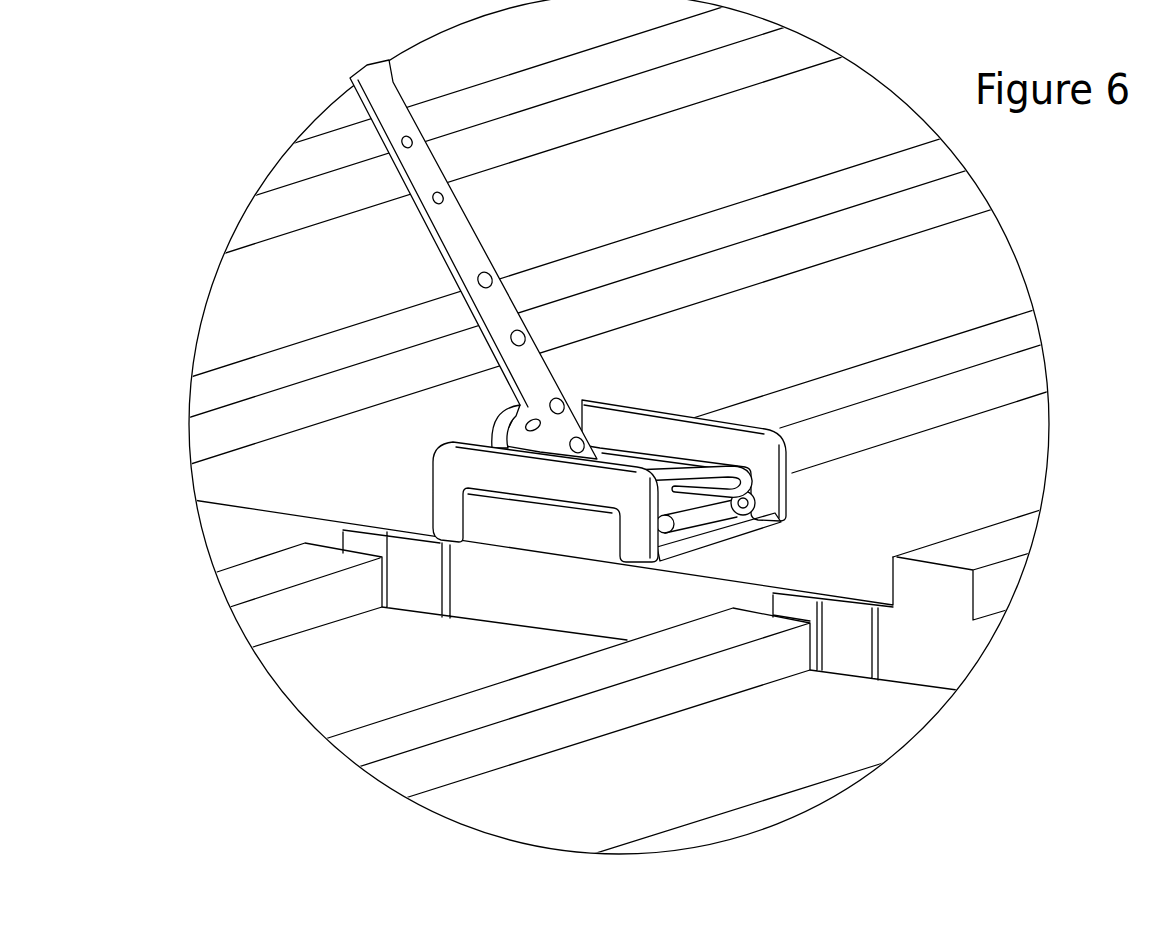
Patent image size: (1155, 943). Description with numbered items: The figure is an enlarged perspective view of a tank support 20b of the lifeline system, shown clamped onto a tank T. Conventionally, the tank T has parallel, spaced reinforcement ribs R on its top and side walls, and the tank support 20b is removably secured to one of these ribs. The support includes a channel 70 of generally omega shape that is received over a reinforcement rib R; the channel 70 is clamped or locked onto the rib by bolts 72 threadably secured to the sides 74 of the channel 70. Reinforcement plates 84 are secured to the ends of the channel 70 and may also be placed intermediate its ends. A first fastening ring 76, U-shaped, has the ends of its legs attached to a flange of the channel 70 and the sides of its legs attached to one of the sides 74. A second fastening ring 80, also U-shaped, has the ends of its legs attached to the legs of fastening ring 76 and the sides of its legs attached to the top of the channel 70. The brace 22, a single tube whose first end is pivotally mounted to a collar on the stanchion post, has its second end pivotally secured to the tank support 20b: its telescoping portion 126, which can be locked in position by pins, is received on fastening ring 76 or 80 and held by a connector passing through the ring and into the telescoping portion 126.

The brace 22 is at (513, 259).
The telescoping portion 126 is at (543, 382).
The tank support 20b is at (677, 430).
The second fastening ring 80 is at (707, 470).
The first fastening ring 76 is at (502, 423).
The reinforcement plates 84 is at (623, 337).
The bolts 72 is at (723, 508).
The sides 74 is at (685, 518).
The channel 70 is at (623, 337).
The reinforcement rib R is at (960, 188).
The tank T is at (977, 257).